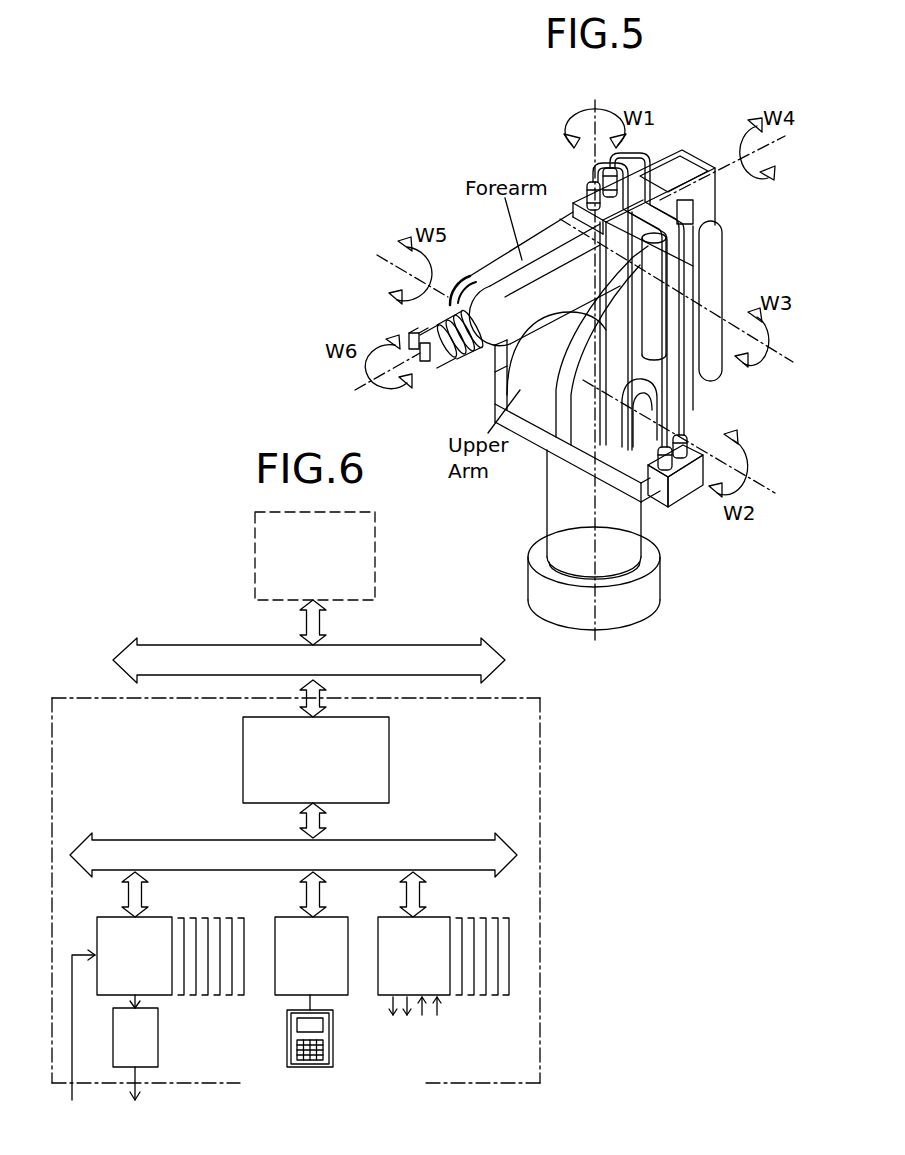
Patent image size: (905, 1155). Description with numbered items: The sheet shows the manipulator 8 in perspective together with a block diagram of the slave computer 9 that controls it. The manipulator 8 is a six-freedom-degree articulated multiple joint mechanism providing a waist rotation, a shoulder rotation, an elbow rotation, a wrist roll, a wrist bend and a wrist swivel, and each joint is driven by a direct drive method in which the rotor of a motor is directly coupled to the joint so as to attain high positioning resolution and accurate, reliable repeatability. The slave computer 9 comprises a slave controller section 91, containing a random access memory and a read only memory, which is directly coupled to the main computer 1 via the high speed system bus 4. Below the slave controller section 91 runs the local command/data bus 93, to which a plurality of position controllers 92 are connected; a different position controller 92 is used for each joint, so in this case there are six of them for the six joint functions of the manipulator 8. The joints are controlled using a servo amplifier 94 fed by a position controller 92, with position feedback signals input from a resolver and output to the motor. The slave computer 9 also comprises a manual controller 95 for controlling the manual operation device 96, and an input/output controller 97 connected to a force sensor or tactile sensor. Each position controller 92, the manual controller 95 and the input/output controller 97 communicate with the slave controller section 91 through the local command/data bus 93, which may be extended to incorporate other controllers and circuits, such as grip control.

In FIG. 5, the manipulator 8 is at (732, 396).
In FIG. 6, the main computer 1 is at (375, 557).
In FIG. 6, the high speed system bus 4 is at (383, 645).
In FIG. 6, the slave computer 9 is at (540, 897).
In FIG. 6, the slave controller section 91 is at (389, 757).
In FIG. 6, the local command/data bus 93 is at (413, 840).
In FIG. 6, the position controller 92 is at (114, 917).
In FIG. 6, the servo amplifier 94 is at (158, 1012).
In FIG. 6, the manual controller 95 is at (290, 995).
In FIG. 6, the manual operation device 96 is at (333, 1052).
In FIG. 6, the input/output (I/O) controller 97 is at (440, 917).